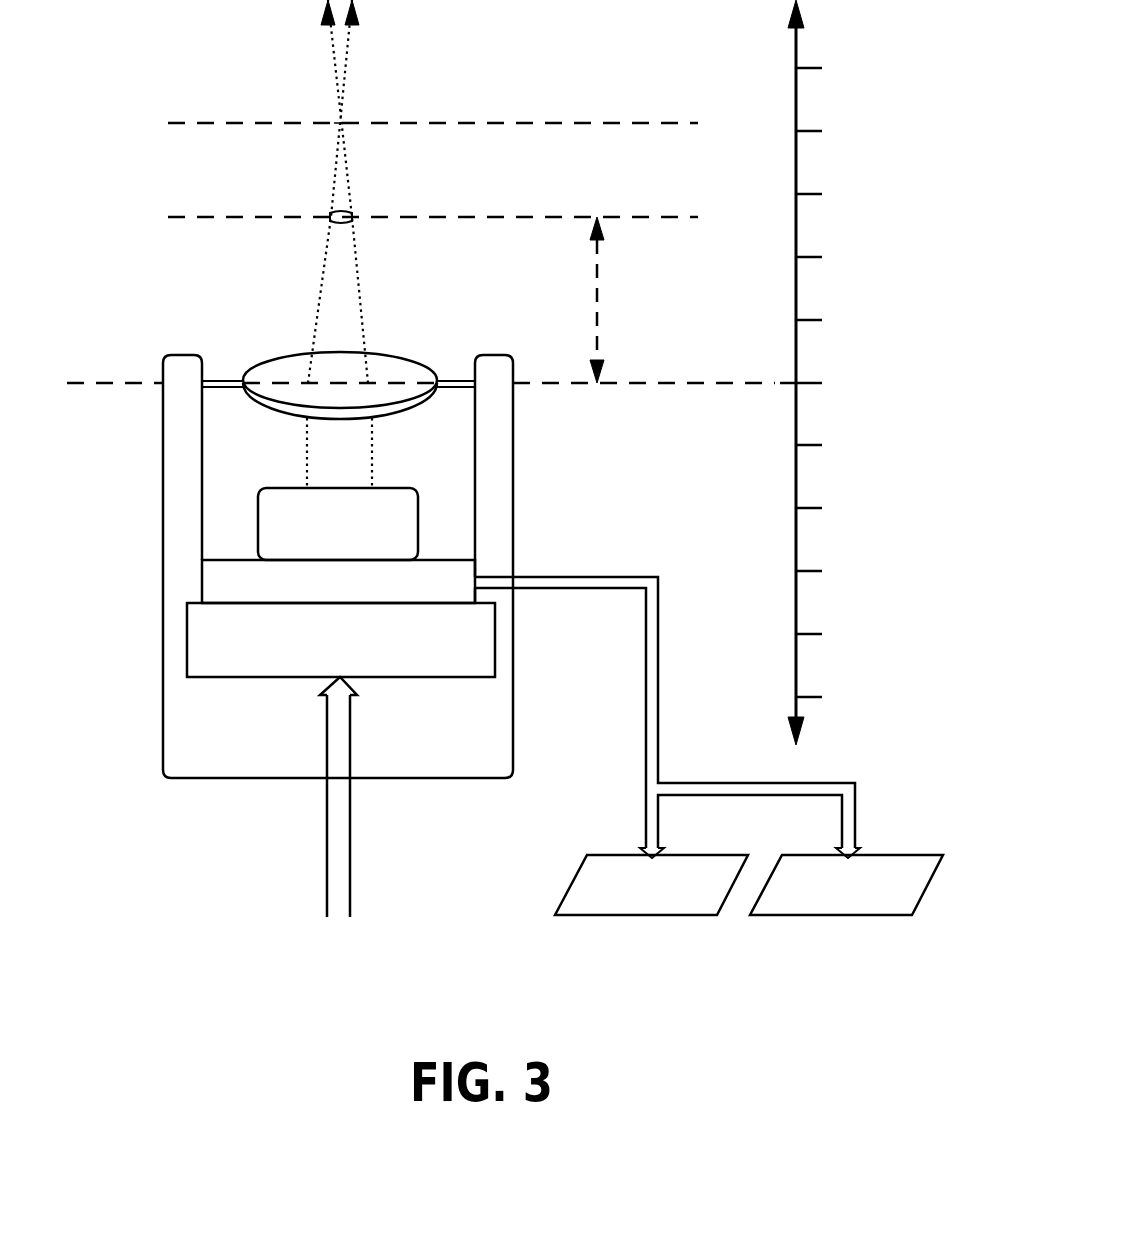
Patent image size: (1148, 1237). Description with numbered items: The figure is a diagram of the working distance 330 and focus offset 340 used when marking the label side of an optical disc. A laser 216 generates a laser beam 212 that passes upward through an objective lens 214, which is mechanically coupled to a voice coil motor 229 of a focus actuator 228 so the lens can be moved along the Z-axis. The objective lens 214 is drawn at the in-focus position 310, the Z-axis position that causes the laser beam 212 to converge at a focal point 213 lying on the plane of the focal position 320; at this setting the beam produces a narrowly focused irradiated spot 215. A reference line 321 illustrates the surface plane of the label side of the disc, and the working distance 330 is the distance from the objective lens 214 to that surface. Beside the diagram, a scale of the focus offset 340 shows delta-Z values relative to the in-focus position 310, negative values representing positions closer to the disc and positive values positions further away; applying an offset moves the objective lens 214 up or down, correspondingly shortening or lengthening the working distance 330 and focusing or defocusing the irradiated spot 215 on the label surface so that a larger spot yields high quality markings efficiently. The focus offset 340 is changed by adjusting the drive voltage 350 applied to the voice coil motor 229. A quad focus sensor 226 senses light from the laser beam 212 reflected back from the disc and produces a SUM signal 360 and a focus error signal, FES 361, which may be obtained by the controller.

The laser beam 212 is at (320, 268).
The focal point 213 is at (343, 125).
The objective lens 214 is at (272, 378).
The irradiated spot 215 is at (333, 212).
The laser 216 is at (338, 524).
The quad focus sensor 226 is at (338, 581).
The focus actuator 228 is at (257, 778).
The voice coil motor 229 is at (341, 640).
The in-focus position 310 is at (665, 383).
The focal position 320 is at (628, 123).
The reference line 321 is at (628, 217).
The working distance 330 is at (597, 283).
The focus offset 340 is at (795, 50).
The drive voltage 350 is at (350, 842).
The SUM signal 360 is at (608, 915).
The FES 361 is at (815, 915).